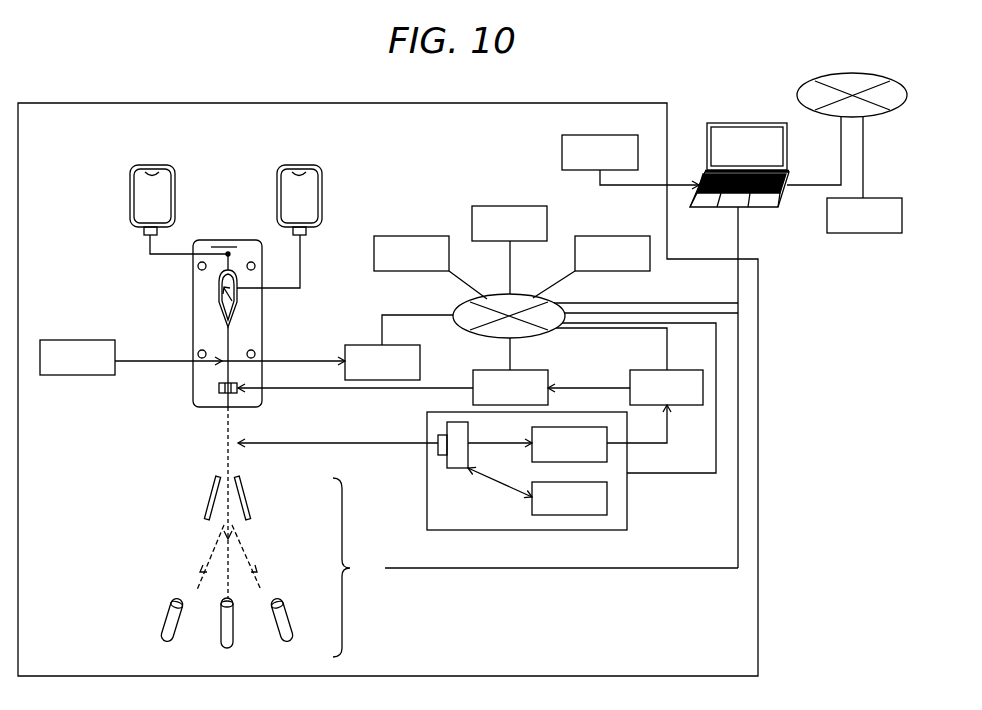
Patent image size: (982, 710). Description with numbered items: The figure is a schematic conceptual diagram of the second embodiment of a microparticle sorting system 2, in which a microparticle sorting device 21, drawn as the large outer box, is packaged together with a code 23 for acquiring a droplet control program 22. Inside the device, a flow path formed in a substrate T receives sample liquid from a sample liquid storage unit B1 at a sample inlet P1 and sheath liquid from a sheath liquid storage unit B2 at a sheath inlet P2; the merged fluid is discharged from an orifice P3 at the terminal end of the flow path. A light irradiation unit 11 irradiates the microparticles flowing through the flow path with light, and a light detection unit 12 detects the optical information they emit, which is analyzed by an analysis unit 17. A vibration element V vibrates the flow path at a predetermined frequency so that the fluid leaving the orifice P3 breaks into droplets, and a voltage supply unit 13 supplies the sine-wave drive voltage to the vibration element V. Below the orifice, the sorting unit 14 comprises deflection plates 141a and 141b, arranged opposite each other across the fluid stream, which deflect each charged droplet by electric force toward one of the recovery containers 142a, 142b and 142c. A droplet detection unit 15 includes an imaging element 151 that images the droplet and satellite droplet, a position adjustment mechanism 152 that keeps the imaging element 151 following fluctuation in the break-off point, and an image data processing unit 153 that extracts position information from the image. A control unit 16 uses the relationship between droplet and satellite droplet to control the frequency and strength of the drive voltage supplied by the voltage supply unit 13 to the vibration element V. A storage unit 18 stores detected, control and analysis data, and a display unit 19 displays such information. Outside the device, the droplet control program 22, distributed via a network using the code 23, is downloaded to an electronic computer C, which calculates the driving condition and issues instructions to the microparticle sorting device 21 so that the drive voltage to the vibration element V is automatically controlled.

The microparticle sorting system 2 is at (752, 289).
The microparticle sorting device 21 is at (91, 182).
The light irradiation unit 11 is at (192, 357).
The light detection unit 12 is at (399, 347).
The voltage supply unit 13 is at (393, 371).
The sorting unit 14 is at (535, 567).
The deflection plate 141a is at (249, 499).
The deflection plate 141b is at (207, 501).
The recovery container 142a is at (287, 621).
The recovery container 142b is at (234, 640).
The recovery container 142c is at (168, 617).
The droplet detection unit 15 is at (627, 511).
The imaging element 151 is at (458, 469).
The position adjustment mechanism 152 is at (569, 498).
The image data processing unit 153 is at (601, 433).
The control unit 16 is at (625, 366).
The analysis unit 17 is at (430, 267).
The storage unit 18 is at (509, 250).
The display unit 19 is at (591, 267).
The droplet control program 22 is at (852, 153).
The code 23 is at (630, 162).
The sample liquid storage unit B1 is at (279, 226).
The sheath liquid storage unit B2 is at (179, 209).
The substrate T is at (223, 238).
The sample inlet P1 is at (238, 292).
The sheath inlet P2 is at (232, 247).
The orifice P3 is at (222, 409).
The vibration element V is at (218, 387).
The electronic computer C is at (778, 151).